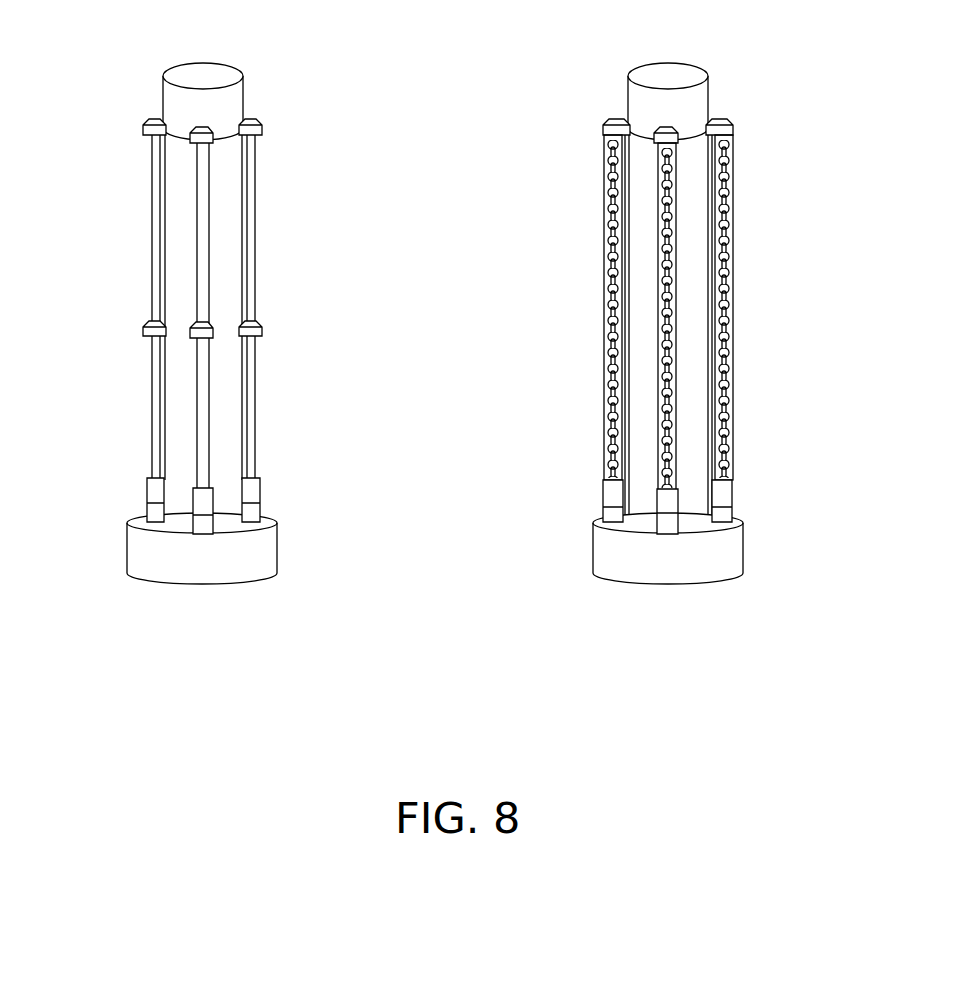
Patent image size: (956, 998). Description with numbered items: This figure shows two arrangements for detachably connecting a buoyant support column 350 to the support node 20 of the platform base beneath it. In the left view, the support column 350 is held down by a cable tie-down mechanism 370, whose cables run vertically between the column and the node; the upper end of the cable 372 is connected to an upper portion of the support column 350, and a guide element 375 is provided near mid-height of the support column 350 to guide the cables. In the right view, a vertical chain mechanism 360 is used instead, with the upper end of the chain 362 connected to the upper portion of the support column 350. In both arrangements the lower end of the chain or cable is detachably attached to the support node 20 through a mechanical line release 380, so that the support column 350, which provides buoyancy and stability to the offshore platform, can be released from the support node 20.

The support node 20 is at (128, 570).
The support column 350 is at (164, 88).
The vertical chain mechanism 360 is at (735, 307).
The upper end of the chain 362 is at (735, 126).
The cable tie-down mechanism 370 is at (255, 253).
The upper end of the cable 372 is at (262, 128).
The guide element 375 is at (262, 324).
The mechanical line release 380 is at (262, 490).